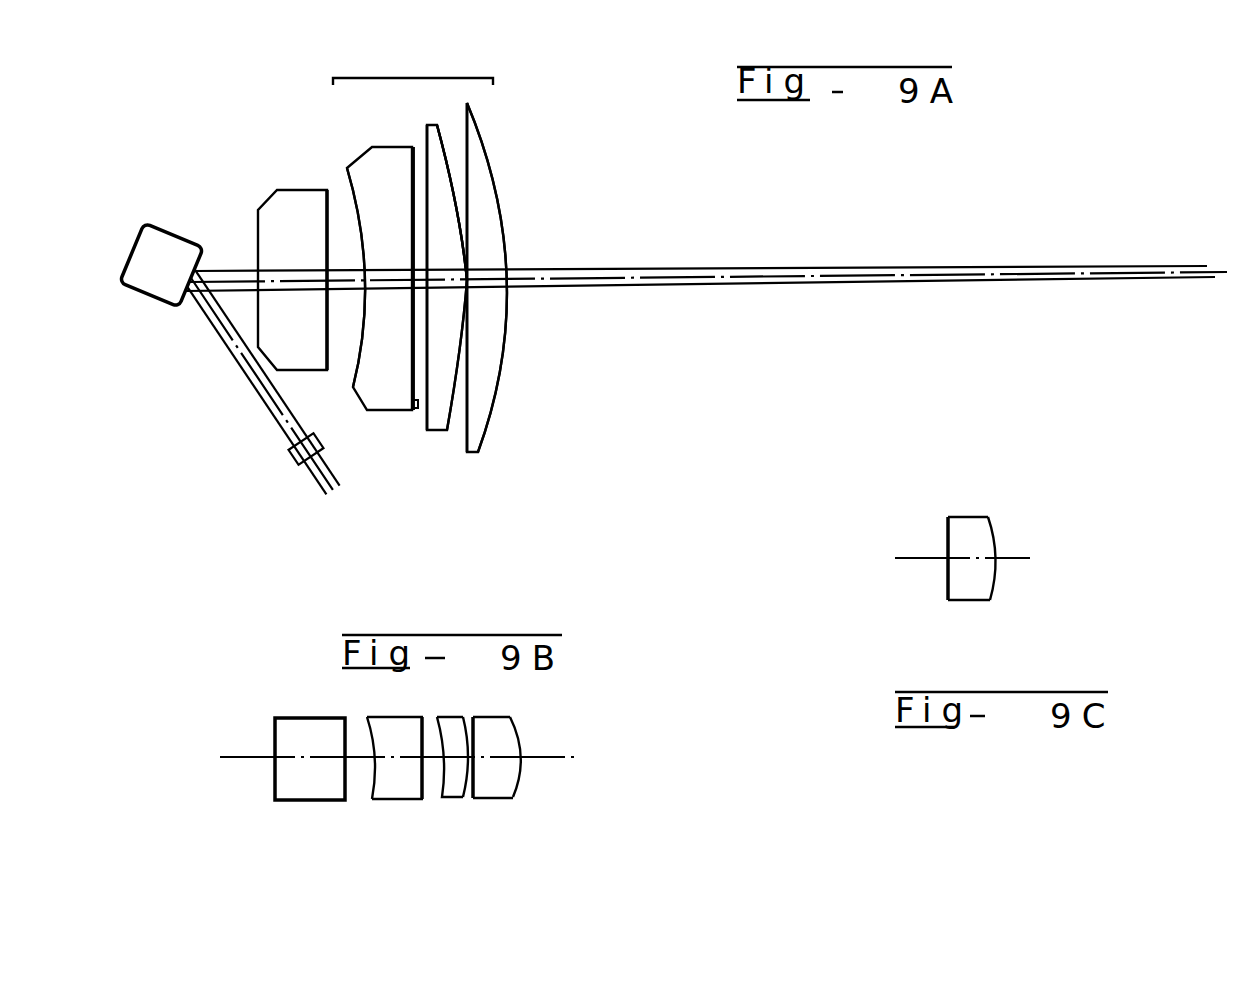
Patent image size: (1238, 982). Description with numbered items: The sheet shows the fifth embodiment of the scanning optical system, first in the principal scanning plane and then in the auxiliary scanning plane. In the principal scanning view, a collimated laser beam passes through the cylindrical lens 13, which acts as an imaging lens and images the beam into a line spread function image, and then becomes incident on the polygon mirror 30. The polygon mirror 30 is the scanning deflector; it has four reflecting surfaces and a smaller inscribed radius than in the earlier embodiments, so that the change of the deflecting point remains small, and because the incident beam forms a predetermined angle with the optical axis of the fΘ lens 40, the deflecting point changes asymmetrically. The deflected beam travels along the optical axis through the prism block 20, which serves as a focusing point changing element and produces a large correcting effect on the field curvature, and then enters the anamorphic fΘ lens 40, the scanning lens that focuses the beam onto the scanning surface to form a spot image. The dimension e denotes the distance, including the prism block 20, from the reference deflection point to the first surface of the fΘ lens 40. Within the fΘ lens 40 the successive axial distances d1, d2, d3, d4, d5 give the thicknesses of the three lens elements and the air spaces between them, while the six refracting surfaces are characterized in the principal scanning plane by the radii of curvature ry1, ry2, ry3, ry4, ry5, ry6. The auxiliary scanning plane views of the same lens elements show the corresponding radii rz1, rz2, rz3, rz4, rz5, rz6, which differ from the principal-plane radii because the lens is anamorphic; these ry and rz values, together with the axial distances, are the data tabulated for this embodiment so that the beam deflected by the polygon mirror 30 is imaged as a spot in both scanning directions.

In FIG. 9A, the polygon mirror 30 is at (175, 233).
In FIG. 9A, the prism block 20 is at (293, 188).
In FIG. 9A, the anamorphic fΘ lens 40 is at (408, 77).
In FIG. 9A, the cylindrical lens 13 is at (298, 462).
In FIG. 9A, the distance from the reference deflection point to the first surface of the fΘ lens e is at (222, 280).
In FIG. 9A, the first axial distance d1 is at (375, 280).
In FIG. 9A, the second axial distance d2 is at (419, 280).
In FIG. 9A, the third axial distance d3 is at (443, 278).
In FIG. 9A, the fourth axial distance d4 is at (468, 278).
In FIG. 9A, the fifth axial distance d5 is at (488, 283).
In FIG. 9A, the radius of curvature in the principal scanning plane of the first surface ry1 is at (355, 352).
In FIG. 9A, the radius of curvature in the principal scanning plane of the second surface ry2 is at (418, 407).
In FIG. 9A, the radius of curvature in the principal scanning plane of the third surface ry3 is at (427, 427).
In FIG. 9A, the radius of curvature in the principal scanning plane of the fourth surface ry4 is at (447, 427).
In FIG. 9A, the radius of curvature in the principal scanning plane of the fifth surface ry5 is at (466, 432).
In FIG. 9A, the radius of curvature in the principal scanning plane of the sixth surface ry6 is at (498, 380).
In FIG. 9B, the radius of curvature in the auxiliary scanning plane of the first surface rz1 is at (372, 780).
In FIG. 9C, the radius of curvature in the auxiliary scanning plane of the first surface rz1 is at (993, 580).
In FIG. 9B, the radius of curvature in the auxiliary scanning plane of the second surface rz2 is at (418, 783).
In FIG. 9C, the radius of curvature in the auxiliary scanning plane of the second surface rz2 is at (947, 577).
In FIG. 9B, the radius of curvature in the auxiliary scanning plane of the third surface rz3 is at (437, 783).
In FIG. 9B, the radius of curvature in the auxiliary scanning plane of the fourth surface rz4 is at (462, 787).
In FIG. 9B, the radius of curvature in the auxiliary scanning plane of the fifth surface rz5 is at (478, 787).
In FIG. 9B, the radius of curvature in the auxiliary scanning plane of the sixth surface rz6 is at (523, 783).